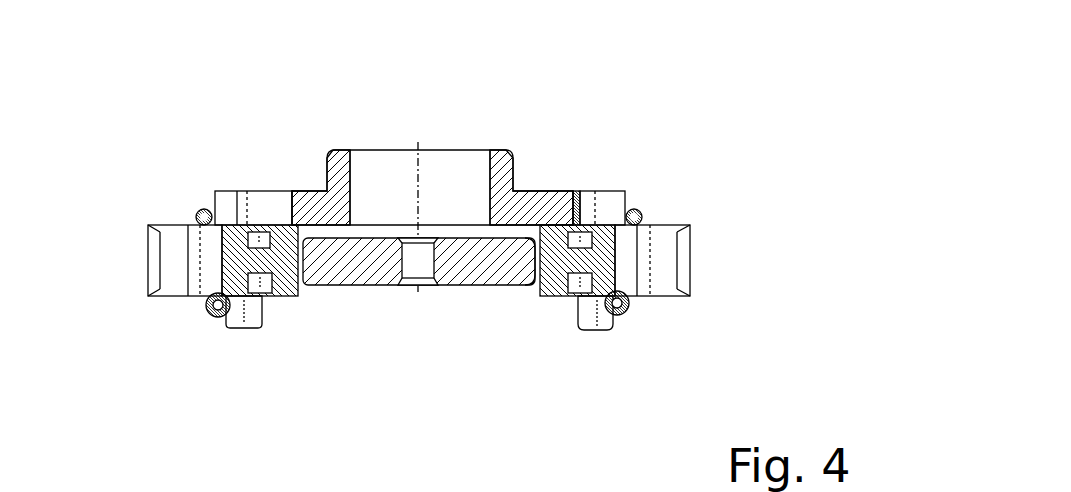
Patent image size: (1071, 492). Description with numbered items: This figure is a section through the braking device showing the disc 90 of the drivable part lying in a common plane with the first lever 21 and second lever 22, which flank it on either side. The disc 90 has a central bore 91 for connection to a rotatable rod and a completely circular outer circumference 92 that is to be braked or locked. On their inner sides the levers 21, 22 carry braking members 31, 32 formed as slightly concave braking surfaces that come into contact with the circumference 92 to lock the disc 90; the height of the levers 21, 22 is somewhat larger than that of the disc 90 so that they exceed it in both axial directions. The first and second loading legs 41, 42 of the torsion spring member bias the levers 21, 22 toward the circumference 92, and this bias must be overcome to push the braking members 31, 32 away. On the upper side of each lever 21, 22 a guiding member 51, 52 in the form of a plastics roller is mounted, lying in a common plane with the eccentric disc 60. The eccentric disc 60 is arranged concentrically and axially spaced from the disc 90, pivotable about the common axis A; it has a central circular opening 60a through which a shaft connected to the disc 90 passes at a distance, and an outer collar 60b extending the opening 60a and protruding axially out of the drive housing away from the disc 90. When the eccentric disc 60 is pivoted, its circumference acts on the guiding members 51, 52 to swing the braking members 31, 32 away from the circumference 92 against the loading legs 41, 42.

The eccentric disc 60 is at (542, 207).
The central opening 60a is at (491, 205).
The outer collar 60b is at (327, 168).
The common axis A is at (420, 177).
The guiding member 52 is at (268, 202).
The guiding member 51 is at (605, 205).
The second loading leg 42 is at (207, 217).
The first loading leg 41 is at (637, 207).
The second lever 22 is at (280, 289).
The first lever 21 is at (558, 290).
The braking member 32 is at (297, 292).
The braking member 31 is at (540, 292).
The disc 90 is at (353, 272).
The central bore 91 is at (402, 273).
The outer circumference 92 is at (530, 258).